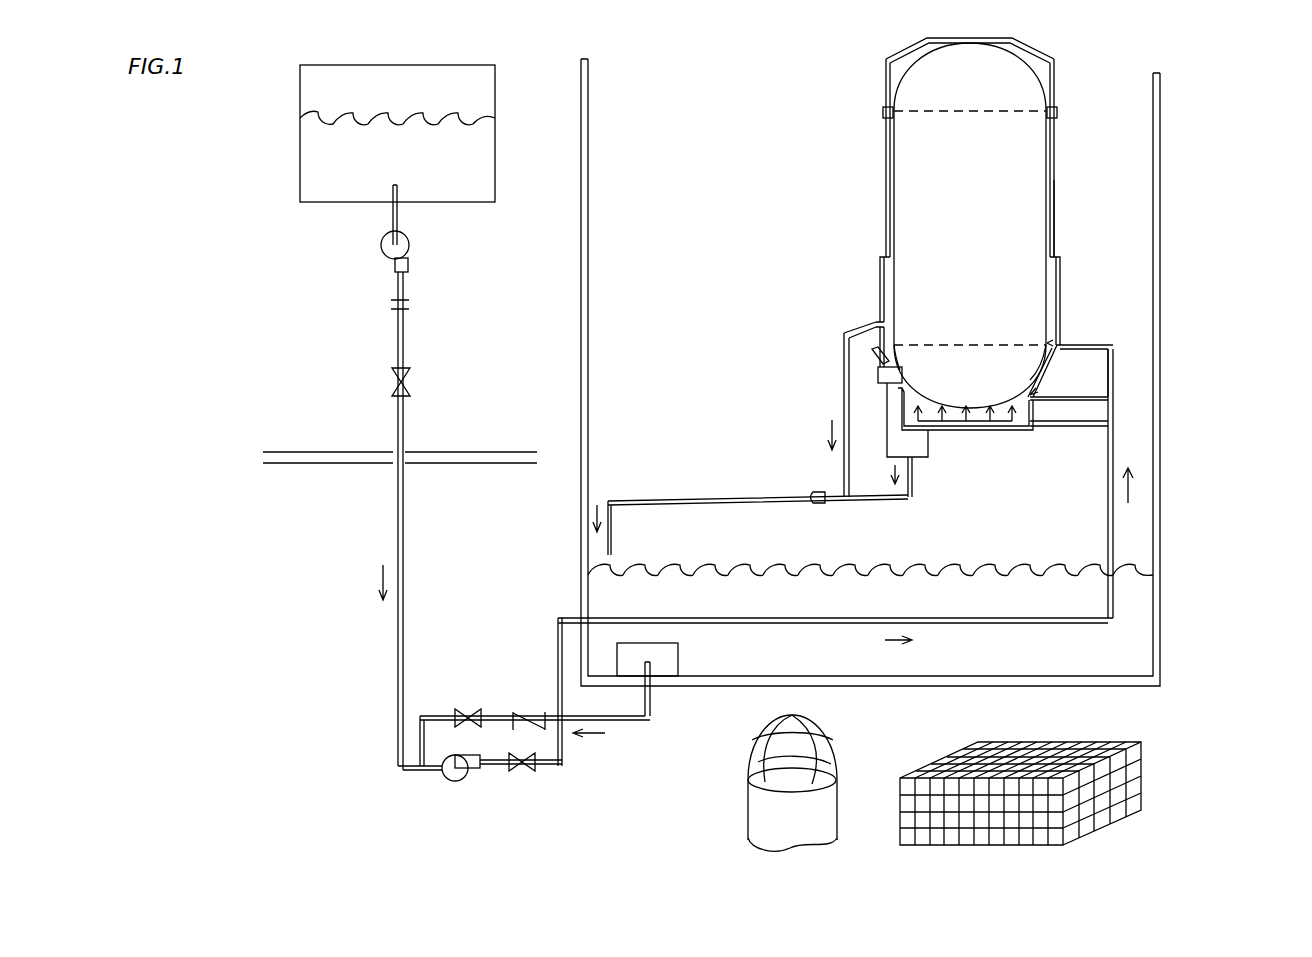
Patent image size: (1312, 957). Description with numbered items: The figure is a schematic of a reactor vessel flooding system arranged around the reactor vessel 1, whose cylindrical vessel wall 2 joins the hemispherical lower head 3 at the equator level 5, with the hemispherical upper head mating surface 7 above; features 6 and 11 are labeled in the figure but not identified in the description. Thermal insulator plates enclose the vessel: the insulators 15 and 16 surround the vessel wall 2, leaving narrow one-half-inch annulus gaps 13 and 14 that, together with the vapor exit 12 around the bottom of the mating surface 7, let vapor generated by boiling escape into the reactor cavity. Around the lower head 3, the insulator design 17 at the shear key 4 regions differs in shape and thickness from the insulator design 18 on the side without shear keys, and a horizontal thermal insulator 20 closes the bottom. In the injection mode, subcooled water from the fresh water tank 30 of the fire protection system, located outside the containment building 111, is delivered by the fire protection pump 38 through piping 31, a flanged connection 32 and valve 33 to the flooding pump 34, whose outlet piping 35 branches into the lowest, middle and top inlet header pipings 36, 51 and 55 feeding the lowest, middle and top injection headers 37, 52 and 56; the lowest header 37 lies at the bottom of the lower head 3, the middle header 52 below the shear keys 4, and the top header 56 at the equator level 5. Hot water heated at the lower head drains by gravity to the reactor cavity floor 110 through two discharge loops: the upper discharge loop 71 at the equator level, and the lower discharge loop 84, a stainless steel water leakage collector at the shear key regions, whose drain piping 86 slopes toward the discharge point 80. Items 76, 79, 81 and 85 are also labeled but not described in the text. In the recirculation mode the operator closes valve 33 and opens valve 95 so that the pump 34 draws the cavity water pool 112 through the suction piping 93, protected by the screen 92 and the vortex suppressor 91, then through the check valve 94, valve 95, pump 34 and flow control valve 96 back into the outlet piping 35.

The reactor vessel 1 is at (935, 55).
The cylindrical vessel wall 2 is at (894, 238).
The reactor lower head 3 is at (955, 410).
The shear key 4 is at (900, 378).
The equator level 5 is at (975, 345).
The upper water level 6 is at (950, 112).
The hemispherical upper head mating surface 7 is at (1058, 112).
The shroud top 11 is at (1030, 45).
The vapor exit 12 is at (1058, 122).
The annulus gap 13 is at (1058, 207).
The annulus gap 14 is at (885, 198).
The thermal insulator 15 is at (1060, 262).
The thermal insulator 16 is at (882, 262).
The insulator design at shear key region 17 is at (895, 360).
The insulator design 18 is at (1035, 372).
The horizontal thermal insulator 20 is at (968, 432).
The fresh water tank 30 is at (300, 187).
The piping 31 is at (395, 660).
The flanged connection 32 is at (412, 305).
The valve 33 is at (410, 385).
The pump 34 is at (462, 782).
The outlet piping 35 is at (998, 625).
The lowest inlet header piping 36 is at (1070, 432).
The lowest injection header 37 is at (1010, 425).
The fire protection pump 38 is at (409, 240).
The middle inlet header piping 51 is at (1098, 390).
The middle injection header 52 is at (1034, 410).
The top inlet header piping 55 is at (1096, 340).
The top injection header 56 is at (1056, 343).
The upper discharge loop 71 is at (877, 325).
The downcomer pipe 76 is at (843, 400).
The pipe fitting 79 is at (816, 493).
The discharge point 80 is at (615, 527).
The flap valve 81 is at (870, 352).
The lower discharge loop 84 is at (930, 445).
The drain pipe 85 is at (918, 475).
The drain piping 86 is at (720, 497).
The vortex suppressor 91 is at (905, 752).
The protective screen 92 is at (653, 662).
The suction piping 93 is at (625, 722).
The check valve 94 is at (540, 715).
The valve 95 is at (470, 712).
The valve 96 is at (525, 772).
The reactor cavity floor 110 is at (1161, 603).
The containment building 111 is at (393, 463).
The cavity water pool 112 is at (802, 566).